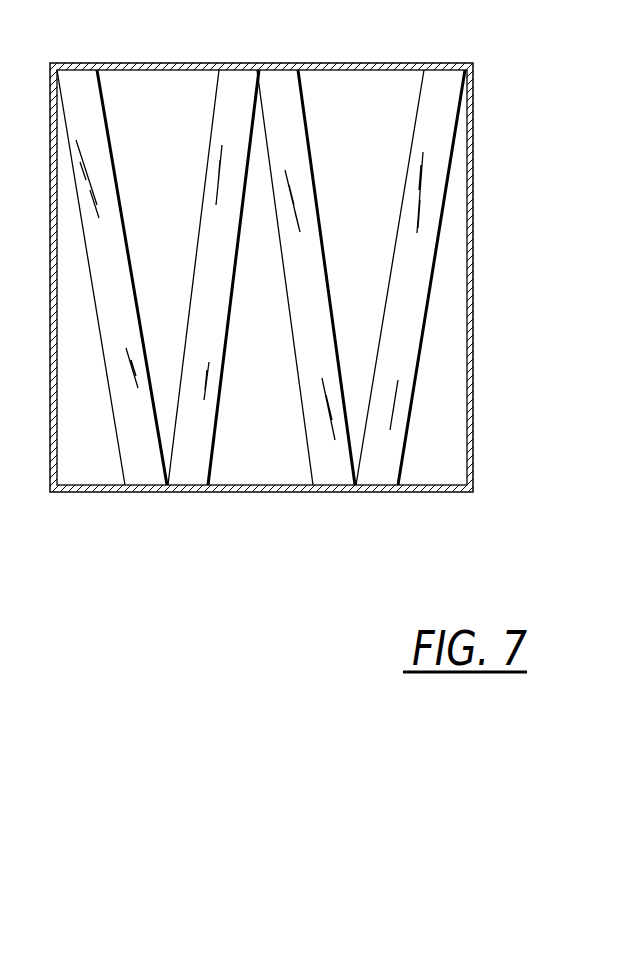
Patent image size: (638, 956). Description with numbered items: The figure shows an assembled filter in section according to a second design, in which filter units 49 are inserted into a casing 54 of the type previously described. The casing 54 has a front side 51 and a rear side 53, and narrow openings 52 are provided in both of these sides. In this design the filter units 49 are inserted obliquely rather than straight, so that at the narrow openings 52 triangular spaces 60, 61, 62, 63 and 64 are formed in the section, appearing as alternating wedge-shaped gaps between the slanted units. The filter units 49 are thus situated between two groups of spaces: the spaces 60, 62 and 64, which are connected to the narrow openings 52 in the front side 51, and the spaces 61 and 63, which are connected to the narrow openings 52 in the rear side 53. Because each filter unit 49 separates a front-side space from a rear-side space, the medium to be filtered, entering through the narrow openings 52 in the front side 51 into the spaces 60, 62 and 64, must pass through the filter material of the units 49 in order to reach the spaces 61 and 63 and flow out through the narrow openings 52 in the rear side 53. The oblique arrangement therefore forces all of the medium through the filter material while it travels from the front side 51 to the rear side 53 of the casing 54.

The filter unit 49 is at (437, 165).
The front side 51 is at (297, 492).
The narrow openings 52 is at (140, 68).
The rear side 53 is at (277, 66).
The casing 54 is at (443, 54).
The triangular space 60 is at (118, 450).
The triangular space 61 is at (168, 450).
The triangular space 62 is at (210, 450).
The triangular space 63 is at (357, 453).
The triangular space 64 is at (402, 460).